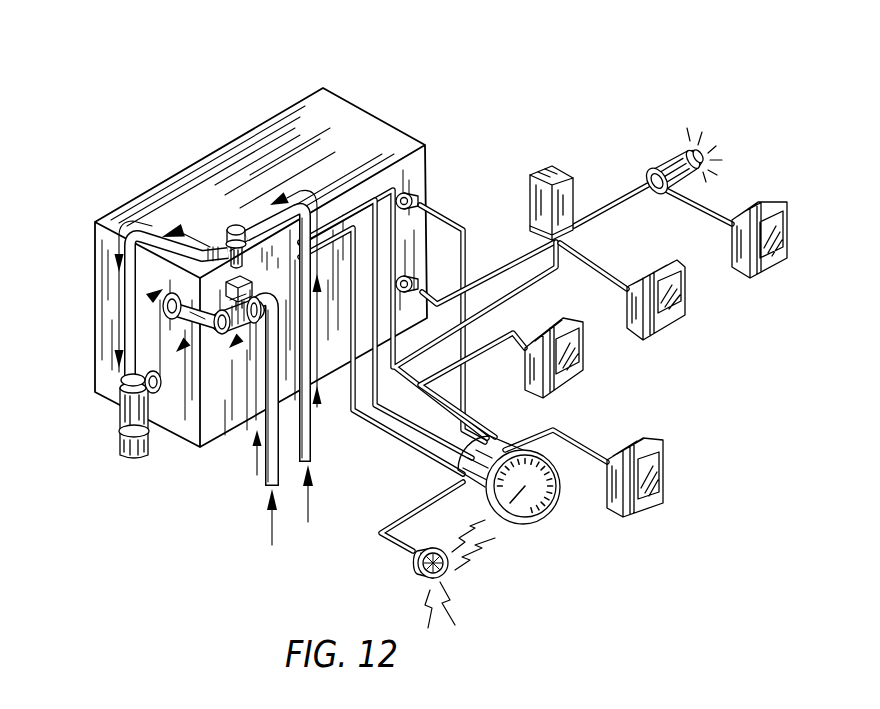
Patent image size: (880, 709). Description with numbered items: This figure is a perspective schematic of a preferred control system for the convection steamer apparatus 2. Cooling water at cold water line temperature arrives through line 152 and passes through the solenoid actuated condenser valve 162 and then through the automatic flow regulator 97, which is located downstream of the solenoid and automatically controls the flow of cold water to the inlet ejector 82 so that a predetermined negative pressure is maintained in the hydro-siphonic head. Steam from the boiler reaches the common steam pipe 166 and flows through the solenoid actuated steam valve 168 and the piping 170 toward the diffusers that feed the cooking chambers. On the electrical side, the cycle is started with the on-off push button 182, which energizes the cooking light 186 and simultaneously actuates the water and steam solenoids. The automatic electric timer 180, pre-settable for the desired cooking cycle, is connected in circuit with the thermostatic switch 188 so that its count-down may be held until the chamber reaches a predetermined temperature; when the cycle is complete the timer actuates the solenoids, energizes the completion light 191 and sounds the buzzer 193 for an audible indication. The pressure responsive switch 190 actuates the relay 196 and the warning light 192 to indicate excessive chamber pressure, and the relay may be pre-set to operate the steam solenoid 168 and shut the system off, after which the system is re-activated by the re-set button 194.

The convection steamer apparatus 2 is at (353, 84).
The automatic flow regulator 97 is at (218, 244).
The solenoid actuated condenser valve 162 is at (230, 226).
The solenoid actuated steam valve 168 is at (240, 320).
The steam piping 170 is at (150, 426).
The inlet ejector 82 is at (104, 401).
The common steam pipe 166 is at (264, 483).
The cooling water line 152 is at (313, 460).
The thermostatic switch 188 is at (418, 198).
The pressure responsive switch 190 is at (420, 286).
The relay 196 is at (558, 171).
The warning light 192 is at (656, 168).
The re-set button 194 is at (770, 264).
The on-off push button 182 is at (672, 311).
The cooking light 186 is at (570, 368).
The cycle-completion light 191 is at (668, 478).
The automatic electric timer 180 is at (538, 506).
The buzzer 193 is at (417, 565).